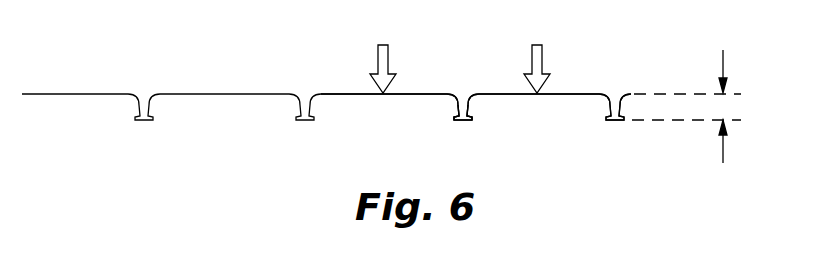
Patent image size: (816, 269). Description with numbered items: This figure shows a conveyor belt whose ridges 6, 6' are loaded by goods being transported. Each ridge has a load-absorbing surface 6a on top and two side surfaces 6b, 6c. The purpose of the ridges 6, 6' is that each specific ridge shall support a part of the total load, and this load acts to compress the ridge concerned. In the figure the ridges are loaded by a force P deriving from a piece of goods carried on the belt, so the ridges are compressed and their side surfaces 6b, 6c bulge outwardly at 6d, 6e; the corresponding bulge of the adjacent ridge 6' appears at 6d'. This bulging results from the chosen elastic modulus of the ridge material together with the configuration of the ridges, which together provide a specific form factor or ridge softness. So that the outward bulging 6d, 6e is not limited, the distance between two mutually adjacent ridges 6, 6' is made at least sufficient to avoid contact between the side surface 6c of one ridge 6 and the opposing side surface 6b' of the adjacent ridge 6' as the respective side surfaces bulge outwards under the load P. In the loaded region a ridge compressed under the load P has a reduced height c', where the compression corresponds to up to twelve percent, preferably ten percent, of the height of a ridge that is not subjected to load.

The ridge 6 is at (381, 135).
The adjacent ridge 6' is at (382, 73).
The load-absorbing surface 6a is at (563, 93).
The side surface 6b is at (633, 79).
The opposing side surface 6b' is at (444, 79).
The side surface 6c is at (472, 101).
The outward bulge 6d is at (601, 139).
The outward bulge 6d' is at (427, 139).
The outward bulge 6e is at (470, 106).
The load force P is at (460, 56).
The compressed ridge height c' is at (726, 106).